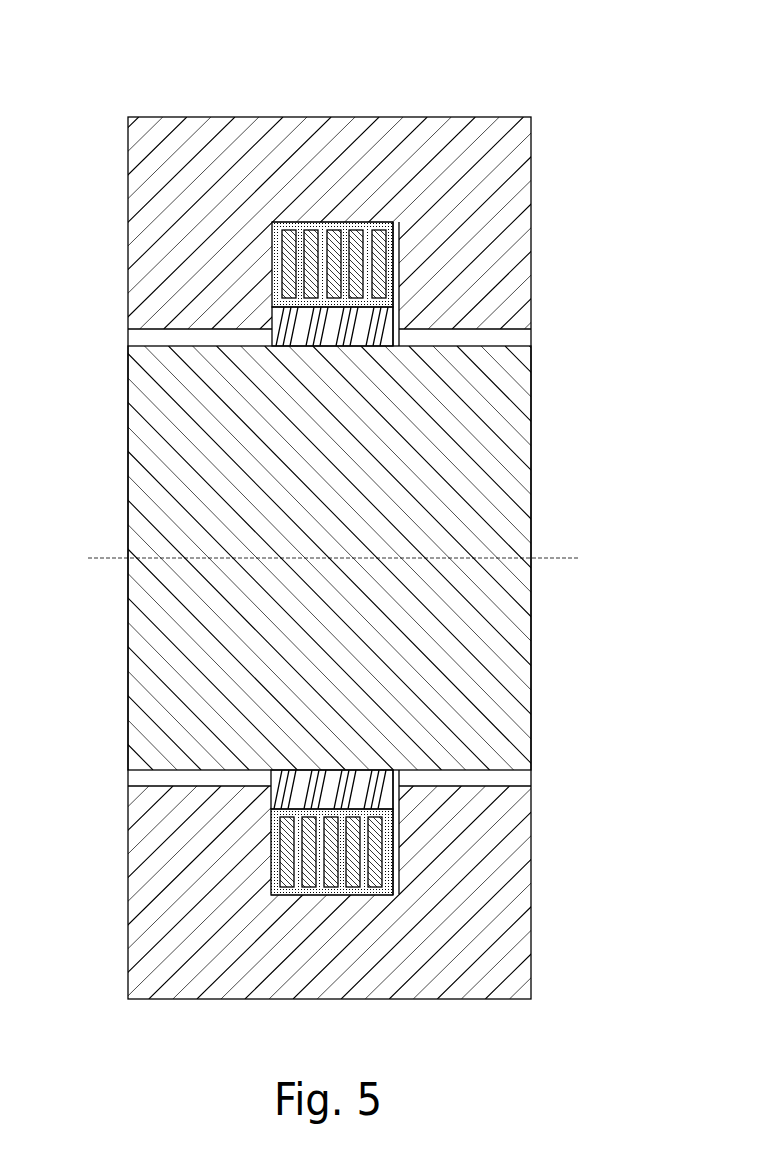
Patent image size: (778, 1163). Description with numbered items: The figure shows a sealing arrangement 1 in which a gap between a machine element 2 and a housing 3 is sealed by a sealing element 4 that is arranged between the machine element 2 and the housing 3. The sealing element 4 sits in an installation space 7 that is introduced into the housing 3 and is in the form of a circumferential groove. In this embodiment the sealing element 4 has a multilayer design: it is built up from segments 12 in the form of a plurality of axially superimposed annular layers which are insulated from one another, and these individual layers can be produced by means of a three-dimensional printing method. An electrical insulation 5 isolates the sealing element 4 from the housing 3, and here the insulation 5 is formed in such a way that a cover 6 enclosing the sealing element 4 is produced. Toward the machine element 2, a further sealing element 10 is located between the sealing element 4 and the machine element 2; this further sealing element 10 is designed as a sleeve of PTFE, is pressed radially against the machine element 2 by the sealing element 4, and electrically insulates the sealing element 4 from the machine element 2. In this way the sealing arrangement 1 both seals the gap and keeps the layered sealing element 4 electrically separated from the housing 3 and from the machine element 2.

The sealing arrangement 1 is at (497, 70).
The machine element 2 is at (508, 472).
The housing 3 is at (508, 157).
The sealing element 4 is at (282, 246).
The electrical insulation 5 is at (304, 222).
The cover 6 is at (399, 265).
The installation space 7 is at (280, 272).
The further sealing element 10 is at (272, 335).
The segments 12 is at (375, 520).